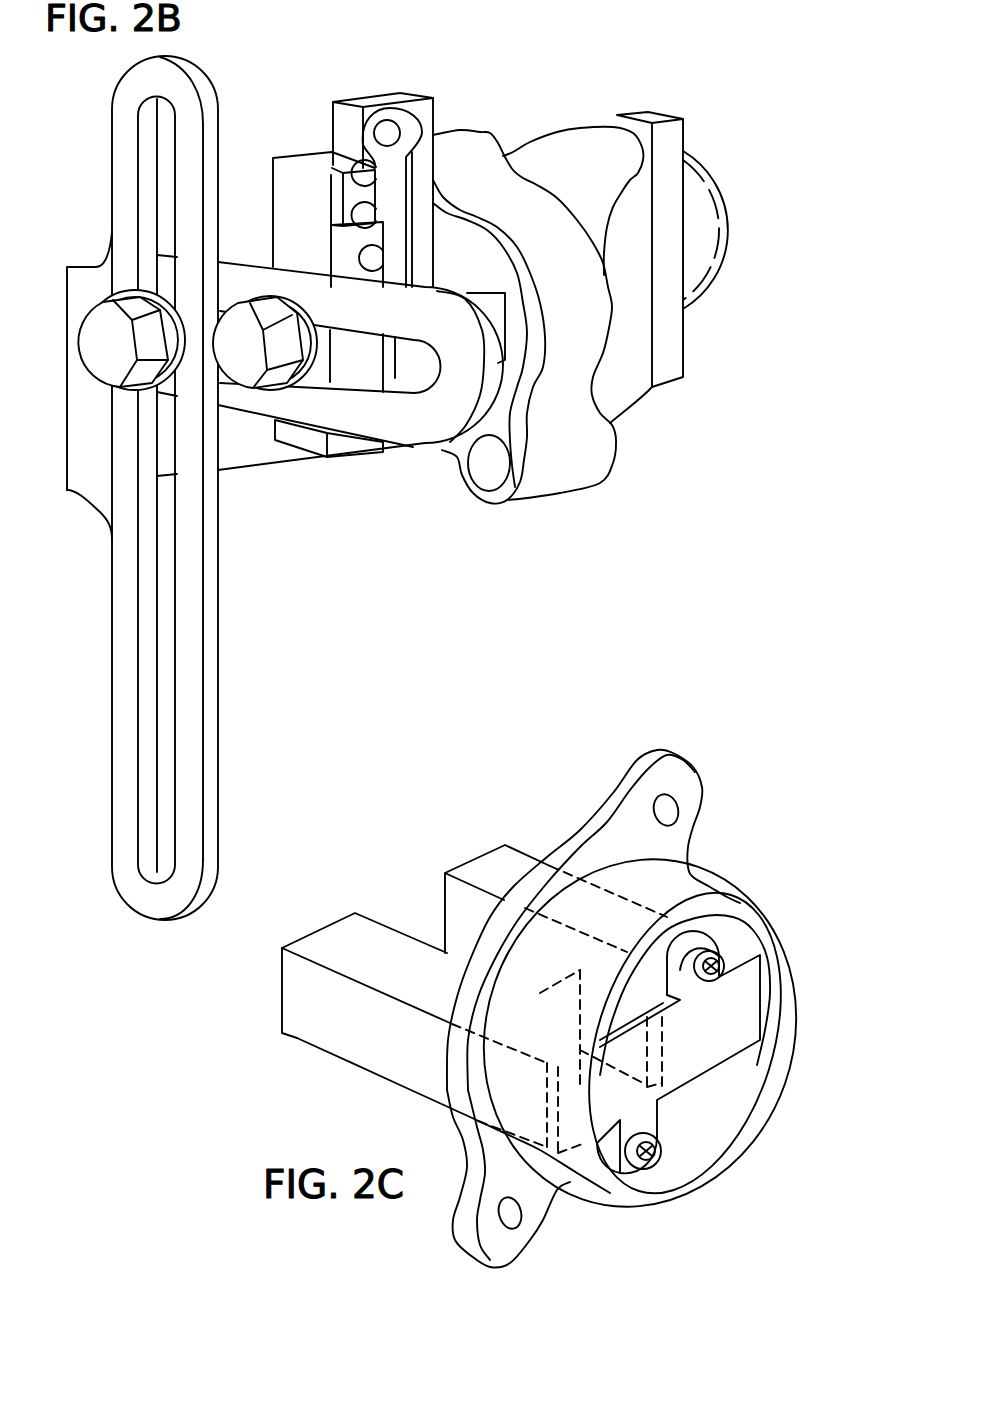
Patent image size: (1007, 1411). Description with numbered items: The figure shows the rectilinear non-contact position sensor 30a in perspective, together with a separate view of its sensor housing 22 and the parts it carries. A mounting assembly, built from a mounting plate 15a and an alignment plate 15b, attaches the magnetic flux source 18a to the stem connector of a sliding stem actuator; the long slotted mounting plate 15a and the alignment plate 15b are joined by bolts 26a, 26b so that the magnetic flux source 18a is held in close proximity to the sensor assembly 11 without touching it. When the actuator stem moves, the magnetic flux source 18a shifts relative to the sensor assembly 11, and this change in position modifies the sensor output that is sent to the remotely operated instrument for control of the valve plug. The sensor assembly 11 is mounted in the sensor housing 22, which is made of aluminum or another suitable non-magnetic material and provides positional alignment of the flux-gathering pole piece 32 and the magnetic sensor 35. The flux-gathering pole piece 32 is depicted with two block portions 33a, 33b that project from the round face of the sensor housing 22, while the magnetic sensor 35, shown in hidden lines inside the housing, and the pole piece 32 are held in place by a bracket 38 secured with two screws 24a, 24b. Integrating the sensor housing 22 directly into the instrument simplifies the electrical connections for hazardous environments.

In FIG. 2B, the sensor assembly 11 is at (490, 512).
In FIG. 2C, the sensor assembly 11 is at (688, 1213).
In FIG. 2B, the mounting plate 15a is at (212, 836).
In FIG. 2B, the alignment plate 15b is at (422, 430).
In FIG. 2B, the magnetic flux source 18a is at (400, 93).
In FIG. 2B, the sensor housing 22 is at (473, 217).
In FIG. 2C, the sensor housing 22 is at (627, 782).
In FIG. 2C, the screw 24a is at (663, 1160).
In FIG. 2C, the screw 24b is at (722, 977).
In FIG. 2B, the bolt 26a is at (102, 337).
In FIG. 2B, the bolt 26b is at (247, 373).
In FIG. 2B, the rectilinear position sensor 30a is at (640, 505).
In FIG. 2C, the flux-gathering pole piece 32 is at (446, 992).
In FIG. 2C, the lower mounting block 33a is at (323, 943).
In FIG. 2C, the upper mounting block 33b is at (508, 868).
In FIG. 2C, the magnetic sensor 35 is at (662, 1062).
In FIG. 2C, the bracket 38 is at (730, 1007).